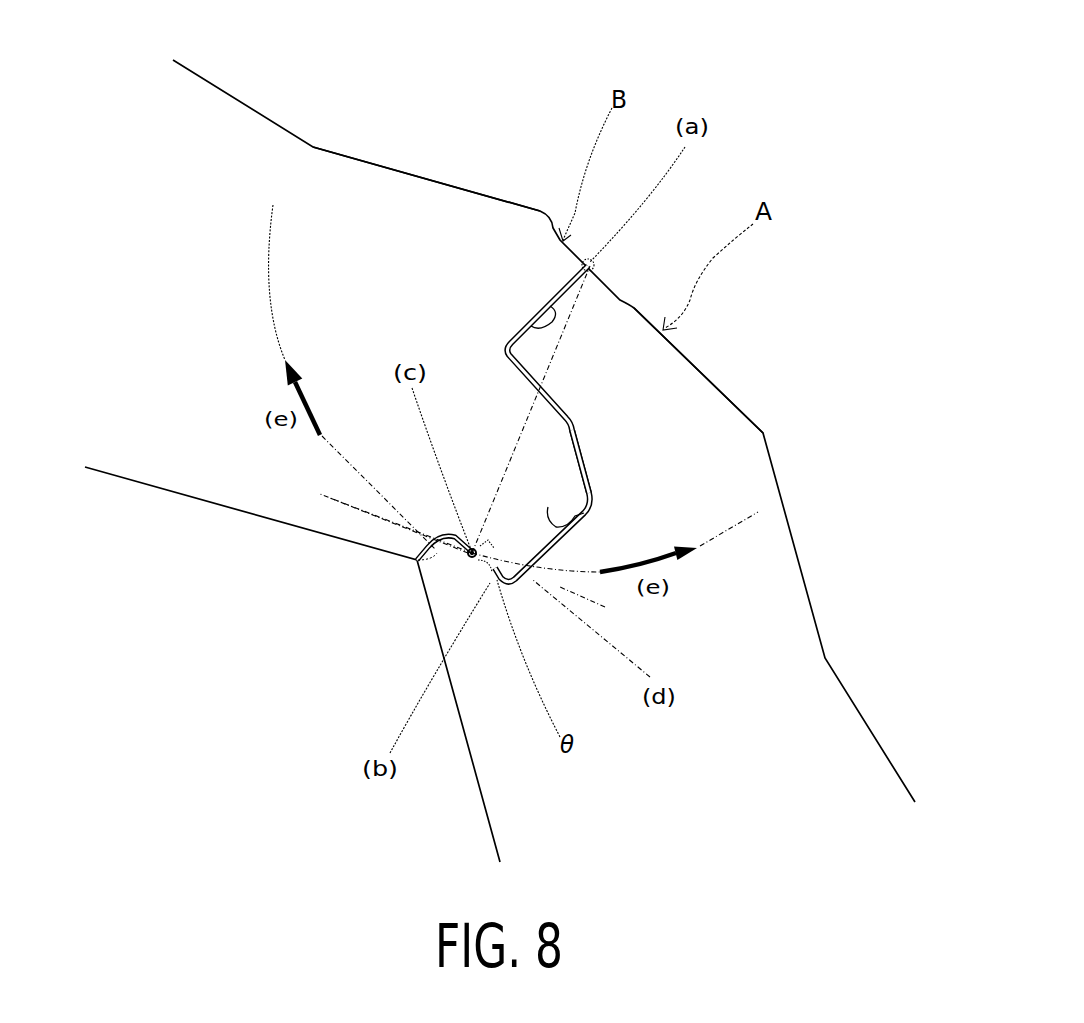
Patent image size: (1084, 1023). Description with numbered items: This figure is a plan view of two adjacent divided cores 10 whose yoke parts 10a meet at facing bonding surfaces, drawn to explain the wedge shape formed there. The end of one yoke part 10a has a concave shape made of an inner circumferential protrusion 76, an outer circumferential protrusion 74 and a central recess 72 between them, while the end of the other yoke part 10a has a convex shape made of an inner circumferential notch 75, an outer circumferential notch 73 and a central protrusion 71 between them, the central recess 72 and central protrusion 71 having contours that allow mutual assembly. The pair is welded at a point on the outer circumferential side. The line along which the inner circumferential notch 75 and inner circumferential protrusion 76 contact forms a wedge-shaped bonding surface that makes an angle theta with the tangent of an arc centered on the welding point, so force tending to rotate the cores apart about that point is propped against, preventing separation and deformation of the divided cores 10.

The divided core 10 is at (233, 124).
The yoke part 10a is at (397, 197).
The central protrusion 71 is at (545, 487).
The central recess 72 is at (548, 507).
The outer circumferential notch 73 is at (552, 293).
The outer circumferential protrusion 74 is at (568, 343).
The inner circumferential notch 75 is at (435, 549).
The inner circumferential protrusion 76 is at (447, 579).